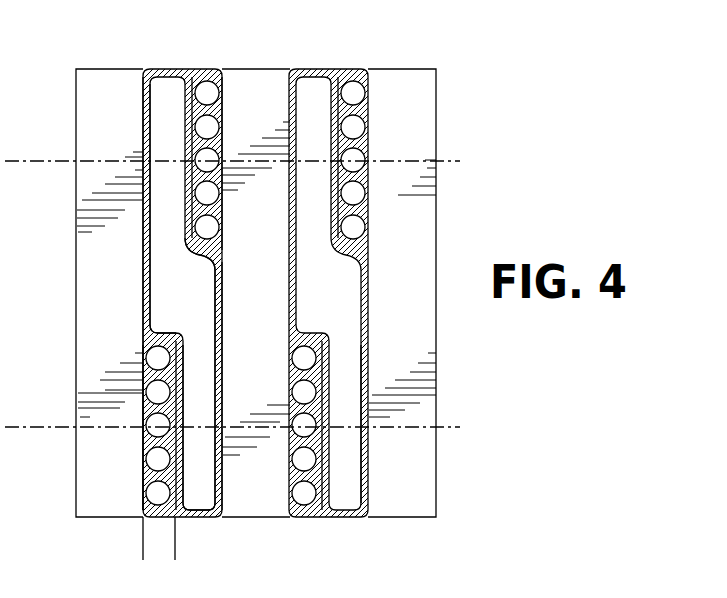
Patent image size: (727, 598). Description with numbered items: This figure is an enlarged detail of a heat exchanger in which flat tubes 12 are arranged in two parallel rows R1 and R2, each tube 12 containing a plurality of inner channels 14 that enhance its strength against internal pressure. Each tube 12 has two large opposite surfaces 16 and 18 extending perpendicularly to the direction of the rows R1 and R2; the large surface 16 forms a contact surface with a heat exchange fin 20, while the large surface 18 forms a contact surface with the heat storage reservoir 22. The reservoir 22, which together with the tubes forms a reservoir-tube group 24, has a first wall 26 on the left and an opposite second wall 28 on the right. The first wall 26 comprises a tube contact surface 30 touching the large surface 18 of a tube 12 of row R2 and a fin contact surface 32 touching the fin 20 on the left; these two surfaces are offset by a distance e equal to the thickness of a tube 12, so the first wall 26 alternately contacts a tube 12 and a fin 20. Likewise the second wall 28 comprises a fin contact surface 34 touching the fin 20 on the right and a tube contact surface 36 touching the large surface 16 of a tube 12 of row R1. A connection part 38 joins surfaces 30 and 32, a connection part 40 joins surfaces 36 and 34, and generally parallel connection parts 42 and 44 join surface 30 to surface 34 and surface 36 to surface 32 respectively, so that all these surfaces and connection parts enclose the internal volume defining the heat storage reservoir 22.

The tube 12 is at (183, 158).
The inner channels 14 is at (157, 393).
The large surface 16 is at (143, 433).
The large opposite surface 18 is at (218, 478).
The heat exchange fin 20 is at (111, 65).
The heat storage reservoir 22 is at (184, 450).
The reservoir-tube group 24 is at (222, 63).
The first wall 26 is at (141, 313).
The second wall 28 is at (226, 268).
The tube contact surface 30 is at (160, 447).
The fin contact surface 32 is at (136, 178).
The fin contact surface 34 is at (226, 438).
The tube contact surface 36 is at (223, 136).
The connection part 38 is at (158, 334).
The connection part 40 is at (200, 254).
The connection part 42 is at (208, 522).
The connection part 44 is at (162, 78).
The first row of tubes R1 is at (455, 170).
The second row of tubes R2 is at (455, 437).
The distance e is at (202, 550).